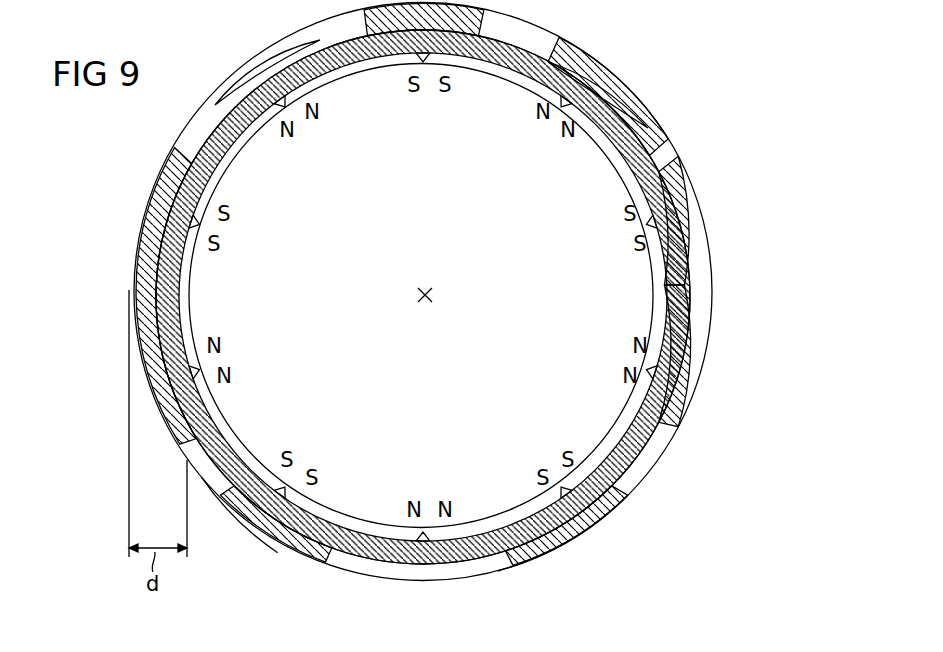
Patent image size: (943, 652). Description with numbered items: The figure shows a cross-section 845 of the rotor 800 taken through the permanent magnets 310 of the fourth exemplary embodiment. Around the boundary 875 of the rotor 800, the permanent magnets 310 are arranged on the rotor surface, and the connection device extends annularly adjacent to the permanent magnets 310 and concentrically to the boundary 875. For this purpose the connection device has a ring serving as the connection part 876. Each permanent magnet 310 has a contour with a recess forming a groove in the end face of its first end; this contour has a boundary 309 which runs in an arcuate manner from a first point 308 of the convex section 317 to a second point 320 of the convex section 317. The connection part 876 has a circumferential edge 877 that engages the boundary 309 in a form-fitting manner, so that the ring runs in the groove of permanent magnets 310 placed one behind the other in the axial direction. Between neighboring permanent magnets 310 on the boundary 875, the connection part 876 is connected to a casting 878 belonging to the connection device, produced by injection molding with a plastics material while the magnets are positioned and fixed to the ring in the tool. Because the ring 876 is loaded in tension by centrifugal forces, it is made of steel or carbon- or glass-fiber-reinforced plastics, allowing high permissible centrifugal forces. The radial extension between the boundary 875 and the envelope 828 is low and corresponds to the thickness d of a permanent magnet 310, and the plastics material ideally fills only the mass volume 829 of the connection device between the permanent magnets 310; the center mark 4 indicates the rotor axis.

The rotation axis 4 is at (436, 296).
The first point 308 is at (598, 62).
The boundary 309 is at (713, 258).
The permanent magnet 310 is at (650, 118).
The convex section 317 is at (668, 128).
The second point 320 is at (710, 205).
The rotor 800 is at (101, 447).
The envelope 828 is at (152, 178).
The mass volume 829 is at (576, 546).
The cross-section 845 is at (148, 222).
The boundary 875 is at (238, 160).
The connection part 876 is at (650, 455).
The circumferential edge 877 is at (152, 290).
The casting 878 is at (258, 537).